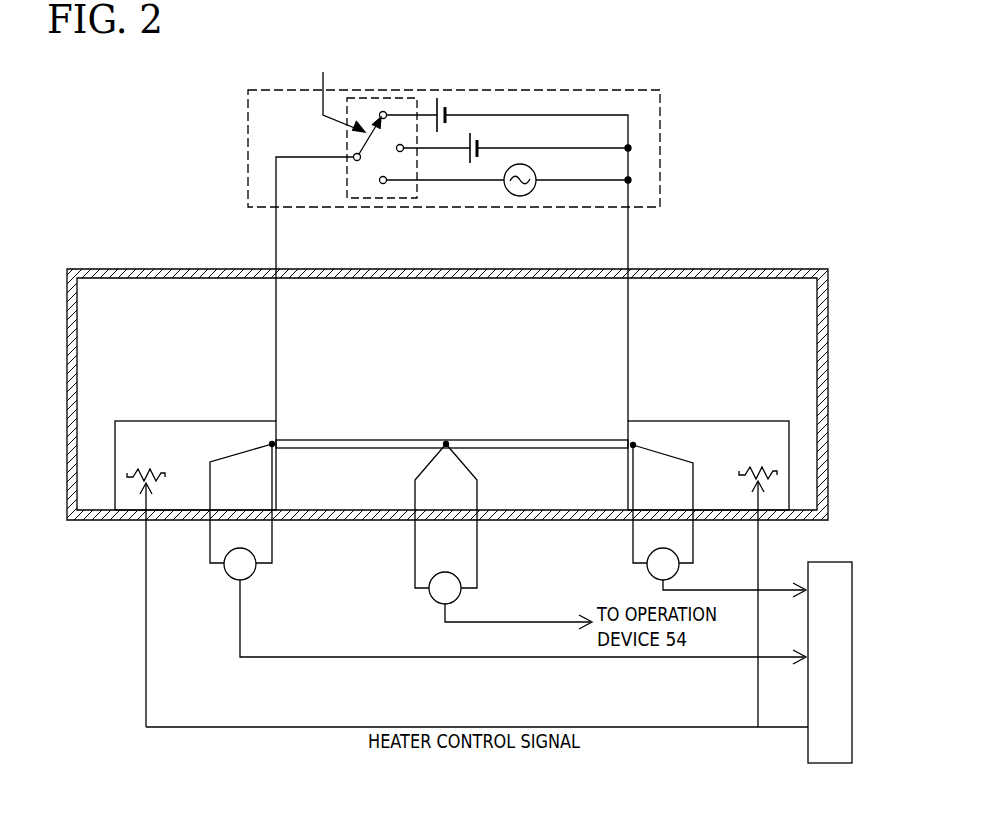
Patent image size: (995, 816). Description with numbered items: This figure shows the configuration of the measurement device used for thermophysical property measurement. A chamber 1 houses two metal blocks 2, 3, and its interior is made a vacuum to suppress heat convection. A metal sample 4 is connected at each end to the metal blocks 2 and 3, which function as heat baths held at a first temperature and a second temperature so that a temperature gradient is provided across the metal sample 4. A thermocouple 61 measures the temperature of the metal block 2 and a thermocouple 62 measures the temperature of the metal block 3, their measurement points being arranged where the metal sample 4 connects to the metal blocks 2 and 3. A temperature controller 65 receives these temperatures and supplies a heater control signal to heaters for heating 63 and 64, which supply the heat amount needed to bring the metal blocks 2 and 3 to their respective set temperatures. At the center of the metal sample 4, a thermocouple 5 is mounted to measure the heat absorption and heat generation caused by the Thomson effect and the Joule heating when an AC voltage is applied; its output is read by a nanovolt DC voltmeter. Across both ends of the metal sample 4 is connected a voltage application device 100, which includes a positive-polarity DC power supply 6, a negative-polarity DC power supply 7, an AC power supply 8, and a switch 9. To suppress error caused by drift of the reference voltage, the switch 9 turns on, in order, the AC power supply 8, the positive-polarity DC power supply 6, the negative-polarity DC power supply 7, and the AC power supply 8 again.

The chamber 1 is at (112, 269).
The metal block 2 is at (183, 421).
The metal block 3 is at (713, 421).
The metal sample 4 is at (532, 440).
The thermocouple 5 is at (478, 560).
The positive-polarity DC power supply 6 is at (443, 98).
The negative-polarity DC power supply 7 is at (473, 132).
The AC power supply 8 is at (522, 197).
The switch 9 is at (373, 198).
The thermocouple 61 is at (273, 541).
The thermocouple 62 is at (694, 541).
The heater for heating 63 is at (144, 467).
The heater for heating 64 is at (756, 465).
The temperature controller 65 is at (815, 764).
The voltage application device 100 is at (660, 143).